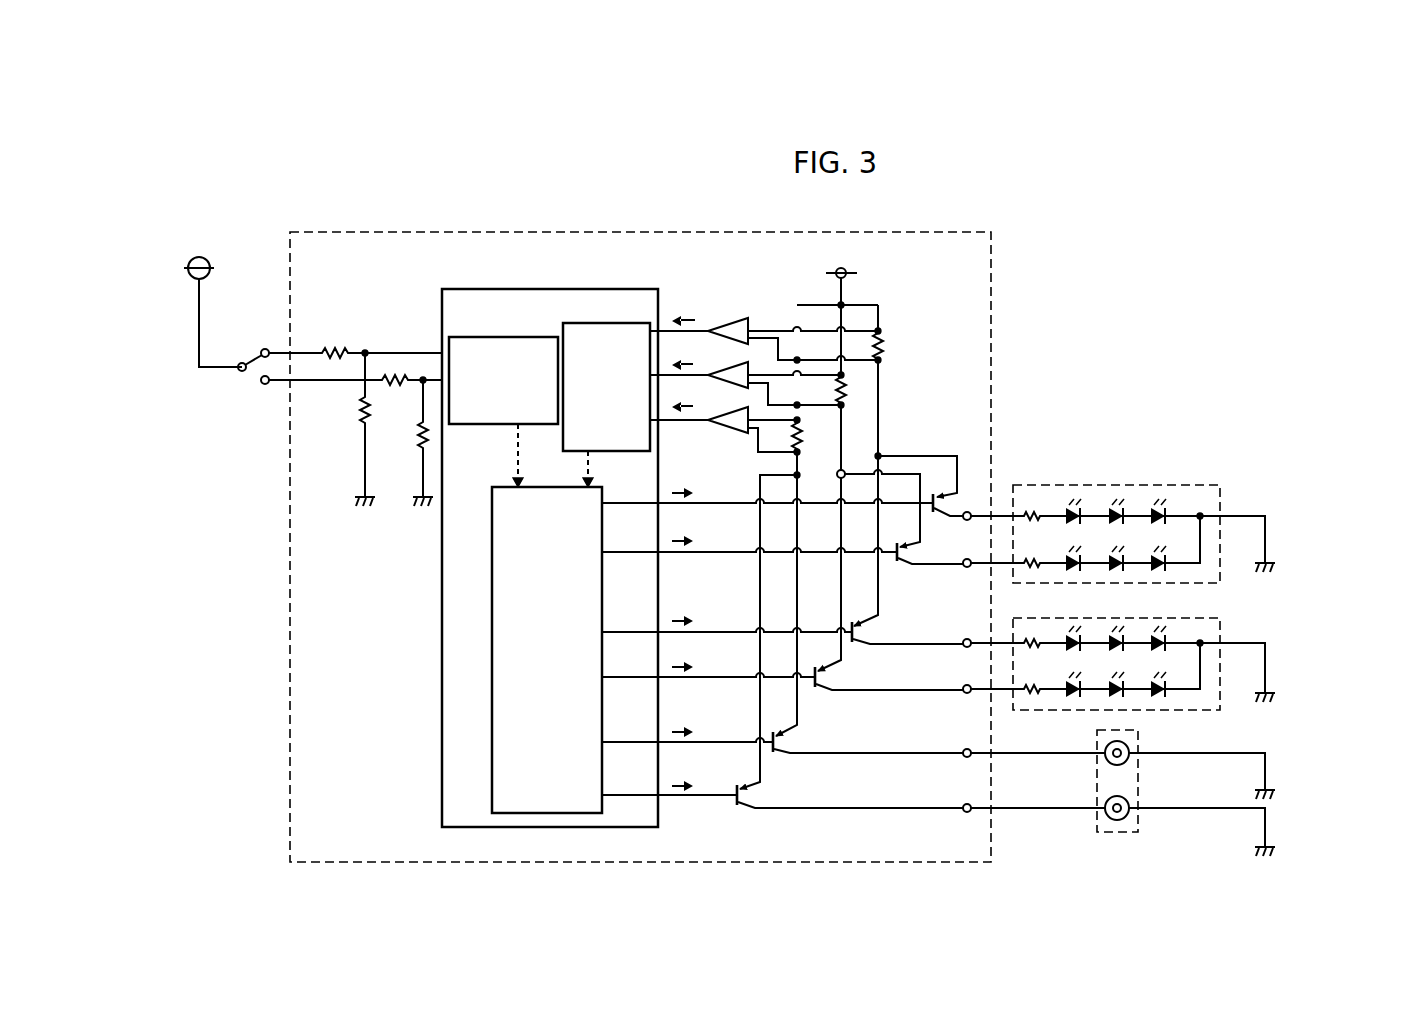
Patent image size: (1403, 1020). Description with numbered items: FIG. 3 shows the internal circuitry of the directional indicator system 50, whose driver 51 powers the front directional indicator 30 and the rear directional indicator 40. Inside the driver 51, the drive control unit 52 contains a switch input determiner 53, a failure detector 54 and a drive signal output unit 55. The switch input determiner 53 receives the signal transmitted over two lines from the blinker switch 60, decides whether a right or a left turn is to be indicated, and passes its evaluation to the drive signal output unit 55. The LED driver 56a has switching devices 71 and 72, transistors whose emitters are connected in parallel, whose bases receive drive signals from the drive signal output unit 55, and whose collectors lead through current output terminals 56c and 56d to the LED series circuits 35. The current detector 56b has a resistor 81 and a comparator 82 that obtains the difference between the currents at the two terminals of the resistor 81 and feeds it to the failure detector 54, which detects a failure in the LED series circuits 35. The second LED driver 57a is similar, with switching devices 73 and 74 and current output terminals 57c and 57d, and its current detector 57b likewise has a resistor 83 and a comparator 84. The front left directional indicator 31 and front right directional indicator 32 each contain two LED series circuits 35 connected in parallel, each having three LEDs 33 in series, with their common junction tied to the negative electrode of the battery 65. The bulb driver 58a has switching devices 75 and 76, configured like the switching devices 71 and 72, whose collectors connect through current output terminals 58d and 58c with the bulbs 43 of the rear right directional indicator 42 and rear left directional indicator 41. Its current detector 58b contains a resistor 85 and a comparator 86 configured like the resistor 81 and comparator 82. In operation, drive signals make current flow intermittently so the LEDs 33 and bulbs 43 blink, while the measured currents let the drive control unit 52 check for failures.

The front directional indicator 30 is at (1198, 586).
The front left directional indicator 31 is at (1222, 618).
The front right directional indicator 32 is at (1090, 484).
The LED 33 is at (1150, 509).
The LED series circuit 35 is at (1058, 504).
The rear directional indicator 40 is at (1218, 793).
The rear left directional indicator 41 is at (1140, 828).
The rear right directional indicator 42 is at (1140, 765).
The bulb 43 is at (1106, 800).
The directional indicator system 50 is at (1302, 256).
The driver 51 is at (288, 628).
The drive control unit 52 is at (442, 703).
The switch input determiner 53 is at (492, 337).
The failure detector 54 is at (610, 323).
The drive signal output unit 55 is at (492, 613).
The LED driver 56a is at (893, 446).
The current detector 56b is at (896, 333).
The current output terminal 56c is at (965, 638).
The current output terminal 56d is at (967, 511).
The LED driver 57a is at (848, 468).
The current detector 57b is at (858, 385).
The current output terminal 57c is at (966, 684).
The current output terminal 57d is at (967, 568).
The bulb driver 58a is at (752, 490).
The current detector 58b is at (810, 458).
The current output terminal 58c is at (967, 803).
The current output terminal 58d is at (967, 748).
The blinker switch 60 is at (251, 388).
The battery 65 is at (199, 256).
The switching device 71 is at (930, 513).
The switching device 72 is at (856, 643).
The switching device 73 is at (896, 562).
The switching device 74 is at (818, 688).
The switching device 75 is at (777, 752).
The switching device 76 is at (736, 802).
The resistor 81 is at (885, 345).
The comparator 82 is at (728, 318).
The resistor 83 is at (846, 396).
The comparator 84 is at (733, 366).
The resistor 85 is at (802, 443).
The comparator 86 is at (735, 430).